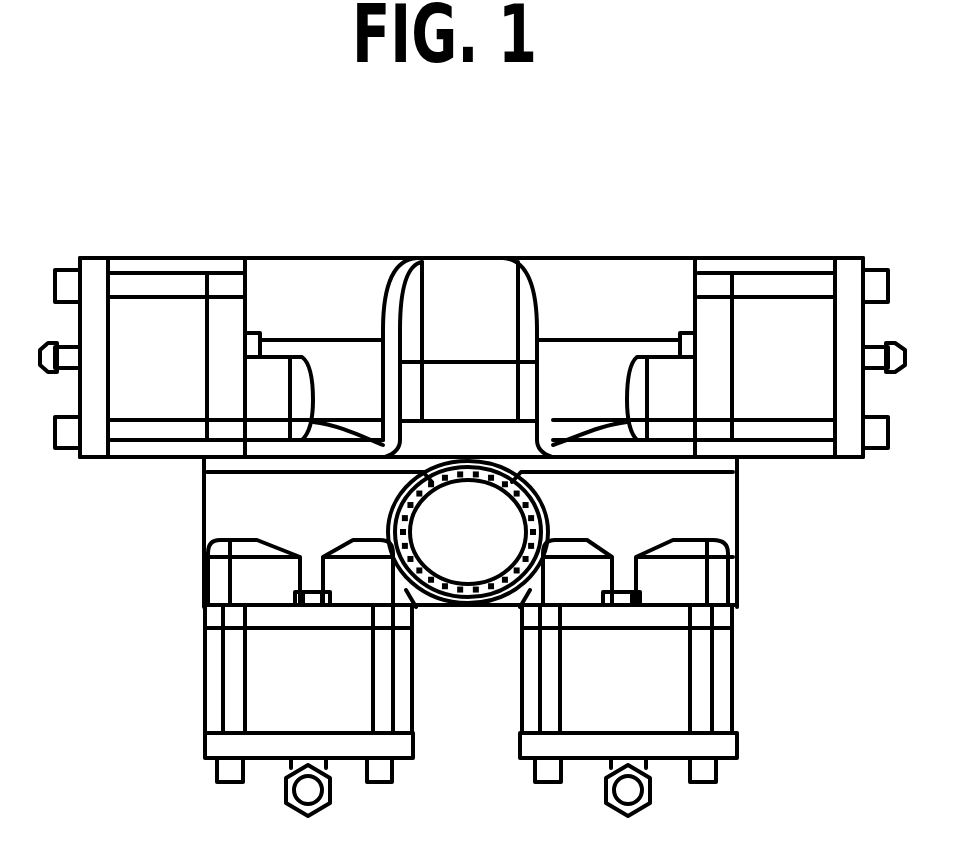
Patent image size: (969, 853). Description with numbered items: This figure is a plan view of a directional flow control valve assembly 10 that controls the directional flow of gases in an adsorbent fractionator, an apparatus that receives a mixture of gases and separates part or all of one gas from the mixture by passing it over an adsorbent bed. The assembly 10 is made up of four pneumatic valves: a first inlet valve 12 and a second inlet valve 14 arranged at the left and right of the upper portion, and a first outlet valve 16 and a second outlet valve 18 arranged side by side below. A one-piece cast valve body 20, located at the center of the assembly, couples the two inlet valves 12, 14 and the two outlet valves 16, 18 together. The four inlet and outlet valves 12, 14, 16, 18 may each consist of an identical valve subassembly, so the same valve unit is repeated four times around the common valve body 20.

The directional flow control valve assembly 10 is at (492, 229).
The first inlet valve 12 is at (160, 315).
The second inlet valve 14 is at (808, 315).
The first outlet valve 16 is at (292, 677).
The second outlet valve 18 is at (647, 651).
The one-piece cast valve body 20 is at (447, 383).